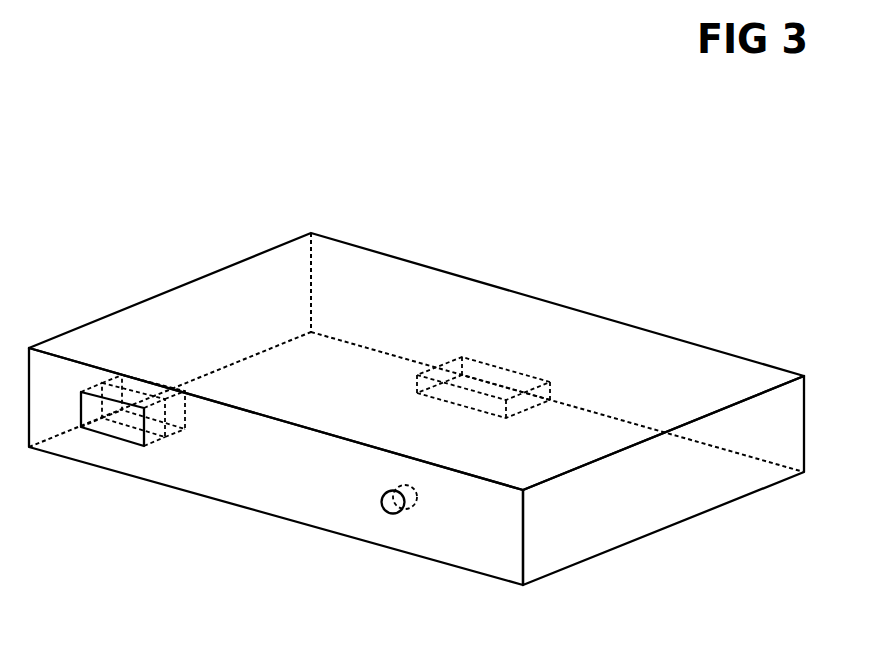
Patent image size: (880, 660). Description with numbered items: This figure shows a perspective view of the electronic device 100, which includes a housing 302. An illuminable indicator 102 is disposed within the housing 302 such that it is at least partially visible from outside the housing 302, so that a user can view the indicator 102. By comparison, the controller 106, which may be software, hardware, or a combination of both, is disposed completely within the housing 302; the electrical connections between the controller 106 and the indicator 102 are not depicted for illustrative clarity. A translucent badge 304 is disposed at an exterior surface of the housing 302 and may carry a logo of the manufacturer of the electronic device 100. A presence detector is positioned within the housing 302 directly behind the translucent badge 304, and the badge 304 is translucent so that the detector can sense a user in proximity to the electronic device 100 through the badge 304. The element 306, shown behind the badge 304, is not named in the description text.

The electronic device 100 is at (103, 110).
The illuminable indicator 102 is at (395, 514).
The controller 106 is at (462, 357).
The housing 302 is at (618, 547).
The translucent badge 304 is at (117, 439).
The connector receptacle 306 is at (183, 423).